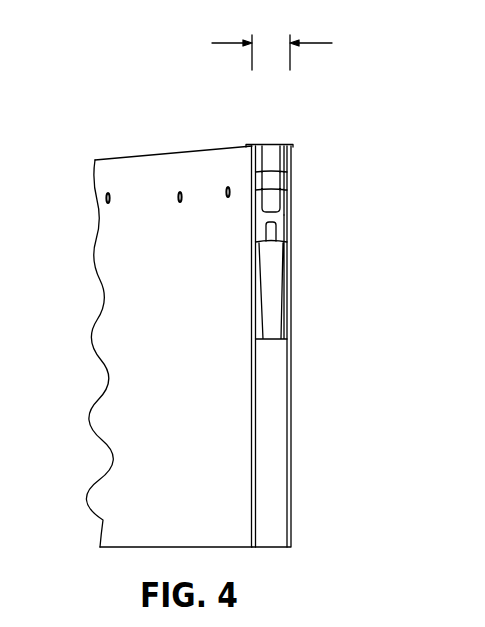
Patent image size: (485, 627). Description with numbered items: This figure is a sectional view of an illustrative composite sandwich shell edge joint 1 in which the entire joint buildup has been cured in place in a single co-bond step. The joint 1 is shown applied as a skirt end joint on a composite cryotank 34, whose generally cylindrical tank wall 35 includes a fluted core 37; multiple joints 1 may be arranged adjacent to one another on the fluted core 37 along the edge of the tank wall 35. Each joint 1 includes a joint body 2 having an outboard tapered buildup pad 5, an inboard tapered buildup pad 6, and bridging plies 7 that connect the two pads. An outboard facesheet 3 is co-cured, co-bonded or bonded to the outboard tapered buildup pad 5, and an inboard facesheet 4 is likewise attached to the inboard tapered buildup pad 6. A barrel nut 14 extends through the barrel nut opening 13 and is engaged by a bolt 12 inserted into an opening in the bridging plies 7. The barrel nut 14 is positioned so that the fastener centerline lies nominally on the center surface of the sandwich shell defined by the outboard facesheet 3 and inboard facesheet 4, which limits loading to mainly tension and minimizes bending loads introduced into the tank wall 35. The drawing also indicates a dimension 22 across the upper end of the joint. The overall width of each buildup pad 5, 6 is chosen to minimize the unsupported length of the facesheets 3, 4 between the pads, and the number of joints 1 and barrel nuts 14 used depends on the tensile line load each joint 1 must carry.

The composite sandwich shell edge joint 1 is at (295, 305).
The joint body 2 is at (292, 163).
The outboard facesheet 3 is at (293, 150).
The inboard facesheet 4 is at (250, 148).
The outboard tapered buildup pad 5 is at (293, 270).
The inboard tapered buildup pad 6 is at (292, 240).
The bridging plies 7 is at (292, 220).
The bolt 12 is at (275, 146).
The barrel nut opening 13 is at (292, 177).
The barrel nut 14 is at (290, 205).
The width 22 is at (272, 52).
The composite cryotank 34 is at (150, 139).
The tank wall 35 is at (292, 485).
The fluted core 37 is at (268, 418).